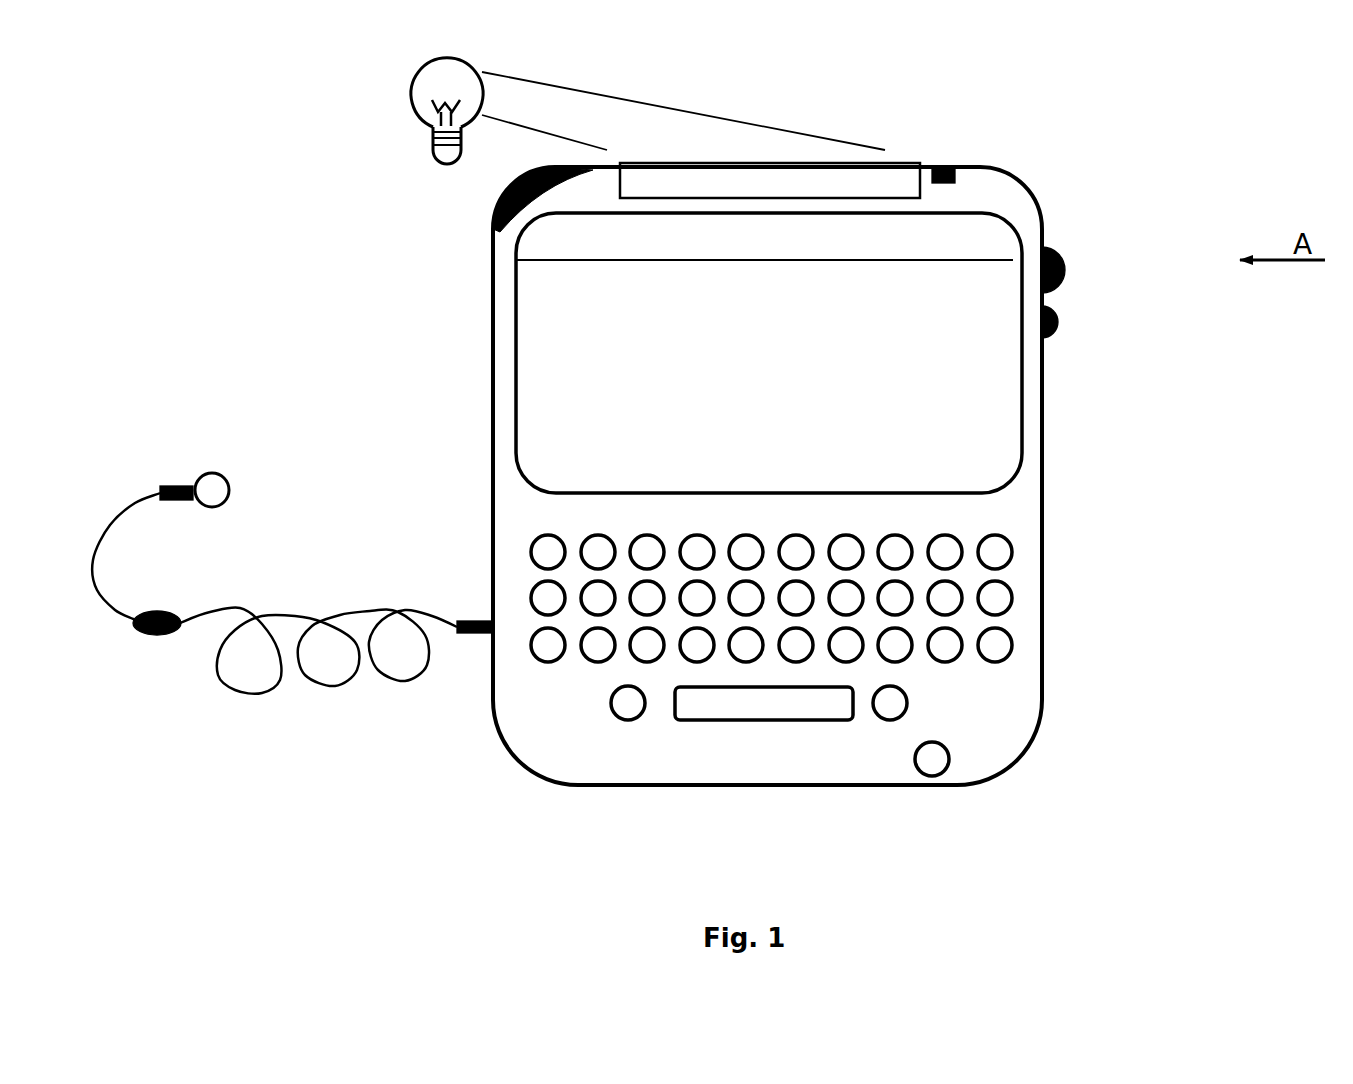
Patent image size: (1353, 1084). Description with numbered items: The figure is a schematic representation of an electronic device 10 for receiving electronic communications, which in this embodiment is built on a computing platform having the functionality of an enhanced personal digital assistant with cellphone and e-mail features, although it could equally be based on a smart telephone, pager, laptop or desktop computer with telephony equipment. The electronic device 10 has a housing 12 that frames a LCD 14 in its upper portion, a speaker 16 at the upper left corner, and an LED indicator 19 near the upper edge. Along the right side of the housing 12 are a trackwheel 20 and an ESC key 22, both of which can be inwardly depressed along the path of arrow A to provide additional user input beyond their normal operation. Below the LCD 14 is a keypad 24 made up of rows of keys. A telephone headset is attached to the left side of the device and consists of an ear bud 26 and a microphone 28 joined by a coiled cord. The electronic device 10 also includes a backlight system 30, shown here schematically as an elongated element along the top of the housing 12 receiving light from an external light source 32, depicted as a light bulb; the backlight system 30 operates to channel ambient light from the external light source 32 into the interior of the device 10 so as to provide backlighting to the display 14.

The electronic device 10 is at (733, 803).
The housing 12 is at (977, 755).
The LCD 14 is at (523, 474).
The speaker 16 is at (520, 191).
The LED indicator 19 is at (955, 175).
The trackwheel 20 is at (1065, 272).
The ESC key 22 is at (1060, 323).
The keypad 24 is at (1023, 598).
The ear bud 26 is at (237, 490).
The microphone 28 is at (180, 613).
The backlight system 30 is at (413, 103).
The external light source 32 is at (905, 178).